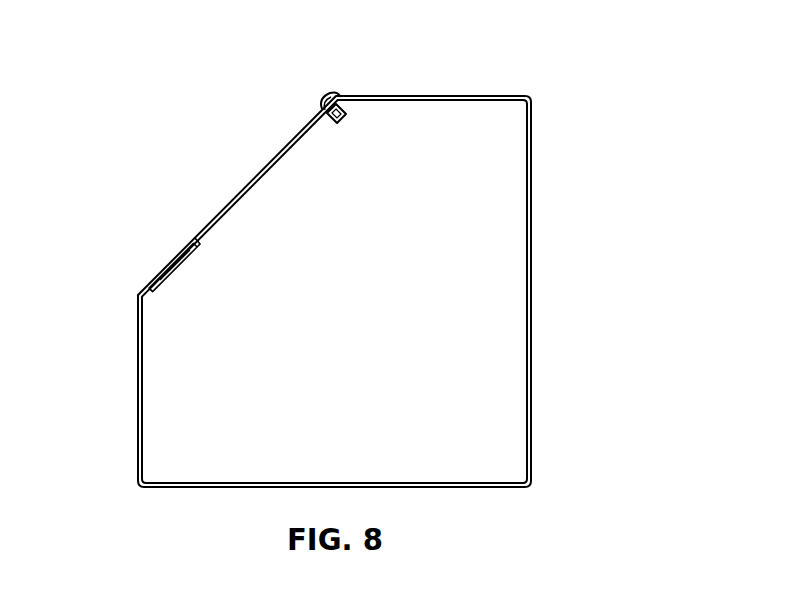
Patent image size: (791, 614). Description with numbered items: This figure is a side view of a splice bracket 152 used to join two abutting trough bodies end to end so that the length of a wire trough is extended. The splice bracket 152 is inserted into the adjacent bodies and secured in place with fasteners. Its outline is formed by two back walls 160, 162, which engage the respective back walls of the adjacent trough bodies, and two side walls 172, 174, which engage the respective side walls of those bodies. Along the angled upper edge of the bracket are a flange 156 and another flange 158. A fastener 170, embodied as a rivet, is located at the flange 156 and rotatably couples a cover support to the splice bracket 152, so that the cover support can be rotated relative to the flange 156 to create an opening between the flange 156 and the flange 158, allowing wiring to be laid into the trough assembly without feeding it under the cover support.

The splice bracket 152 is at (588, 137).
The flange 156 is at (333, 102).
The flange 158 is at (146, 290).
The back wall 160 is at (528, 298).
The back wall 162 is at (192, 484).
The fastener 170 is at (318, 103).
The side wall 172 is at (437, 96).
The side wall 174 is at (139, 390).